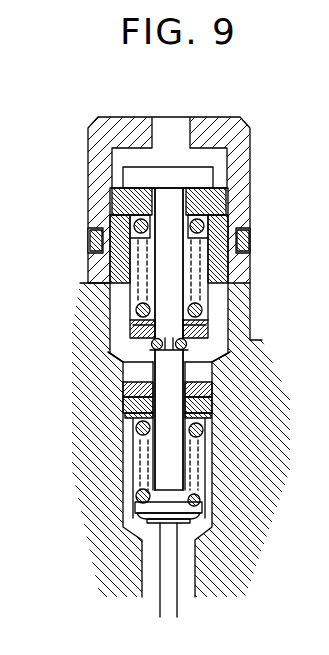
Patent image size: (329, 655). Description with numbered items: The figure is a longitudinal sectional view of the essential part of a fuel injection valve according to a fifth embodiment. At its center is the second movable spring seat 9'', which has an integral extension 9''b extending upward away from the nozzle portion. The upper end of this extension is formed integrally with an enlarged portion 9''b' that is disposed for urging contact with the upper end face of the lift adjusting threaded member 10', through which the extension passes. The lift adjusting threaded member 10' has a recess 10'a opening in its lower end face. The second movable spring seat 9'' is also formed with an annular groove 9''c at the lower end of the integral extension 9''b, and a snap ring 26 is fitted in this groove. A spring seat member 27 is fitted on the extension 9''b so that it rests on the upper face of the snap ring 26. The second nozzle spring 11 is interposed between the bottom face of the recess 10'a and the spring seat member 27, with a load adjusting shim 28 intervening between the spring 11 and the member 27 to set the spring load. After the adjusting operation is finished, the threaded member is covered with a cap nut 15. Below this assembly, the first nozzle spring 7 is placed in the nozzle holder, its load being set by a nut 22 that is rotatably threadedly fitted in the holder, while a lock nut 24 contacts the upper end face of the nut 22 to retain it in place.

The cap nut 15 is at (237, 130).
The enlarged portion 9''b' is at (211, 183).
The lift adjusting threaded member 10' is at (208, 209).
The second nozzle spring 11 is at (252, 245).
The recess 10'a is at (211, 267).
The integral extension 9''b is at (229, 339).
The load adjusting shim 28 is at (137, 322).
The spring seat member 27 is at (200, 318).
The snap ring 26 is at (190, 348).
The second movable spring seat 9'' is at (183, 440).
The annular groove 9''c is at (126, 370).
The lock nut 24 is at (218, 398).
The nut 22 is at (213, 420).
The first nozzle spring 7 is at (212, 448).